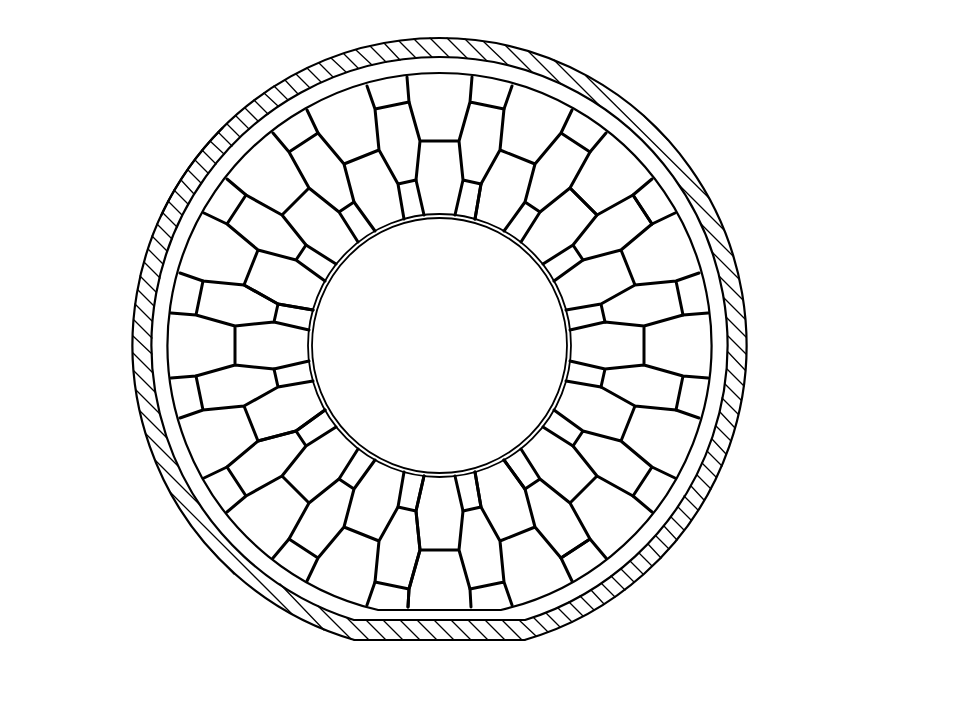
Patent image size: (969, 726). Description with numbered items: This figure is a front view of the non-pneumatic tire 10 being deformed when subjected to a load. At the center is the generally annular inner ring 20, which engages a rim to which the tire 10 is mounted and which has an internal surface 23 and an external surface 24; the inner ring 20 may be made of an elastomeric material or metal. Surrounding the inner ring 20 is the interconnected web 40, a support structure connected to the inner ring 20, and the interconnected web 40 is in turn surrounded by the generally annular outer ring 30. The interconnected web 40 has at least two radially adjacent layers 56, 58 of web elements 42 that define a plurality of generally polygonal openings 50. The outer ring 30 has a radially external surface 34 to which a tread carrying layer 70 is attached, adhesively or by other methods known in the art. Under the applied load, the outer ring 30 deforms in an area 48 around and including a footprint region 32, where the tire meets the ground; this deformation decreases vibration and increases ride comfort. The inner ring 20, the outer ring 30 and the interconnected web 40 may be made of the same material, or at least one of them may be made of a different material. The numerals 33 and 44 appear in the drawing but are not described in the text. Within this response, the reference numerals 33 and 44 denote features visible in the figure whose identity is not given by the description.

The non-pneumatic tire 10 is at (737, 157).
The generally annular inner ring 20 is at (439, 345).
The internal surface 23 is at (490, 240).
The external surface 24 is at (492, 218).
The generally annular outer ring 30 is at (453, 361).
The footprint region 32 is at (457, 643).
The inner surface of shear band 33 is at (717, 352).
The radially external surface 34 is at (742, 322).
The interconnected web 40 is at (665, 218).
The web elements 42 is at (290, 461).
The spoke walls 44 is at (284, 324).
The area 48 is at (417, 603).
The generally polygonal openings 50 is at (253, 469).
The radially adjacent layer 56 is at (596, 537).
The radially adjacent layer 58 is at (490, 467).
The tread carrying layer 70 is at (200, 157).